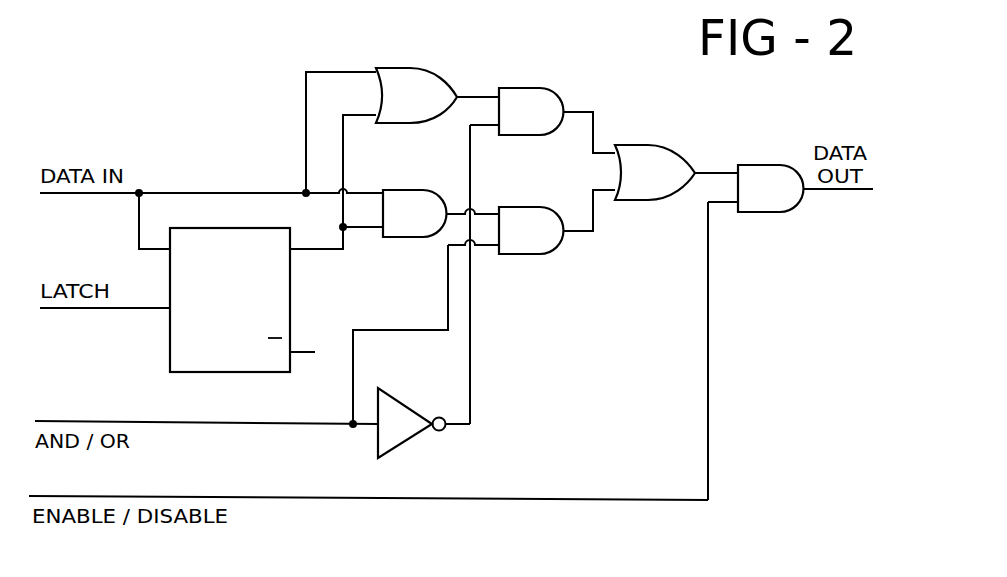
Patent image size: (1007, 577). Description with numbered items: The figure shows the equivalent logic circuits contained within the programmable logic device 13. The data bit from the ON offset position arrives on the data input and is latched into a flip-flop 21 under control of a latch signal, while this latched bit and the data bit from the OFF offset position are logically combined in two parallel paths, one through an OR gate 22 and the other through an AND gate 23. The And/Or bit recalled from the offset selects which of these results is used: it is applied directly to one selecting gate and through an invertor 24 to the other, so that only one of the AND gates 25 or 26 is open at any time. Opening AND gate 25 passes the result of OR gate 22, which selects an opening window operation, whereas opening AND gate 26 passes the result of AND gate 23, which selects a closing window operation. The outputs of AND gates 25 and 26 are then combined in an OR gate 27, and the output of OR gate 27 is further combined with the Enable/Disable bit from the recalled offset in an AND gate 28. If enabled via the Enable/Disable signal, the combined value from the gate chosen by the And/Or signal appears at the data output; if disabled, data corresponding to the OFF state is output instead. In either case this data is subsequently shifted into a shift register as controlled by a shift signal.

The programmable logic device 13 is at (208, 140).
The flip-flop 21 is at (168, 343).
The OR gate 22 is at (402, 67).
The AND gate 23 is at (415, 238).
The invertor 24 is at (400, 447).
The AND gate 25 is at (527, 87).
The AND gate 26 is at (517, 255).
The OR gate 27 is at (648, 144).
The AND gate 28 is at (753, 213).